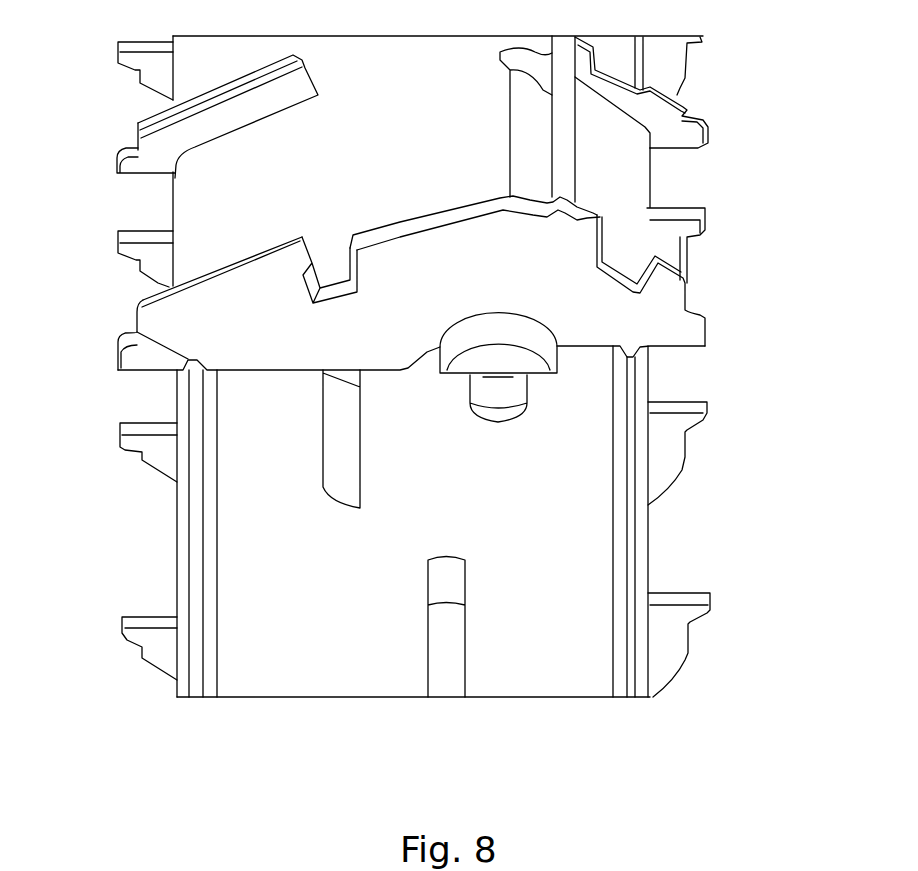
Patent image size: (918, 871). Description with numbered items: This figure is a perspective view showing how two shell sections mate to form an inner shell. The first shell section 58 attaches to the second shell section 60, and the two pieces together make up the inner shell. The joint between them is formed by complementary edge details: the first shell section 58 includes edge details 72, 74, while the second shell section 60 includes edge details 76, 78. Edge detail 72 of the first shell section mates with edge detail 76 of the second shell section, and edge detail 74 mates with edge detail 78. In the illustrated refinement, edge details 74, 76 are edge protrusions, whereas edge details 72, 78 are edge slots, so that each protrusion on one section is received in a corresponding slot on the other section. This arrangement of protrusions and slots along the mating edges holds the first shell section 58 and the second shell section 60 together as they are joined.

The first shell section 58 is at (592, 473).
The second shell section 60 is at (630, 168).
The edge detail 72 is at (635, 445).
The edge detail 74 is at (188, 462).
The edge detail 76 is at (648, 346).
The edge detail 78 is at (137, 330).